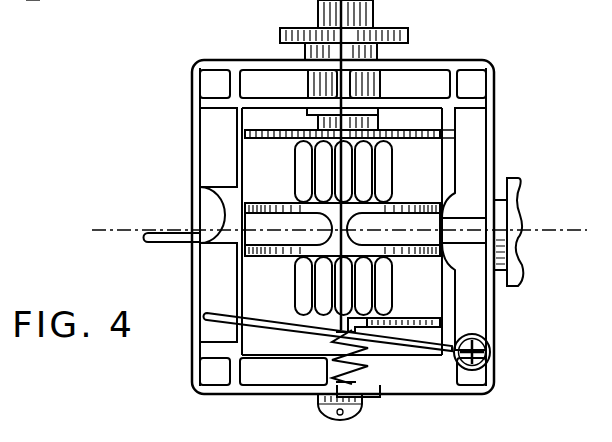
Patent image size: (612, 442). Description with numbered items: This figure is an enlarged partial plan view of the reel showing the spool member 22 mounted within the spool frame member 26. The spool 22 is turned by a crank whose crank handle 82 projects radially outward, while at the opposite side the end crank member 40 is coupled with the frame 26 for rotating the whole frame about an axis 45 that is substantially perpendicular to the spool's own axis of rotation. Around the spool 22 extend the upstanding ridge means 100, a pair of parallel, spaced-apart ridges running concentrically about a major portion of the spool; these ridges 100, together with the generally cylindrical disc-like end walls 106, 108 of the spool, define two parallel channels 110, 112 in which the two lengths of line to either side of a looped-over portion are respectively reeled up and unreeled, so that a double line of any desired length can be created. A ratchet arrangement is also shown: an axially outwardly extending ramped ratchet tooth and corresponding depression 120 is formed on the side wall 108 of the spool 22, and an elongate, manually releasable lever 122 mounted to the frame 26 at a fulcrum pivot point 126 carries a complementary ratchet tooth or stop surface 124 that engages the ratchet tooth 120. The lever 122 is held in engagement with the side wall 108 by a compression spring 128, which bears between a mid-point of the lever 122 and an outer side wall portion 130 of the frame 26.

The crank handle 82 is at (26, 1).
The spool frame member 26 is at (186, 70).
The spool member 22 is at (405, 132).
The disc-like end wall 106 is at (455, 133).
The channel 112 is at (294, 168).
The upstanding ridge means 100 is at (273, 256).
The channel 110 is at (295, 293).
The complementary ratchet tooth or stop surface 124 is at (380, 313).
The disc-like end wall 108 is at (442, 322).
The lever 122 is at (210, 320).
The fulcrum pivot point 126 is at (492, 348).
The compression spring 128 is at (327, 368).
The ratchet tooth and depression 120 is at (370, 358).
The outer side wall portion 130 is at (372, 382).
The end crank member 40 is at (523, 185).
The axis 45 is at (535, 235).